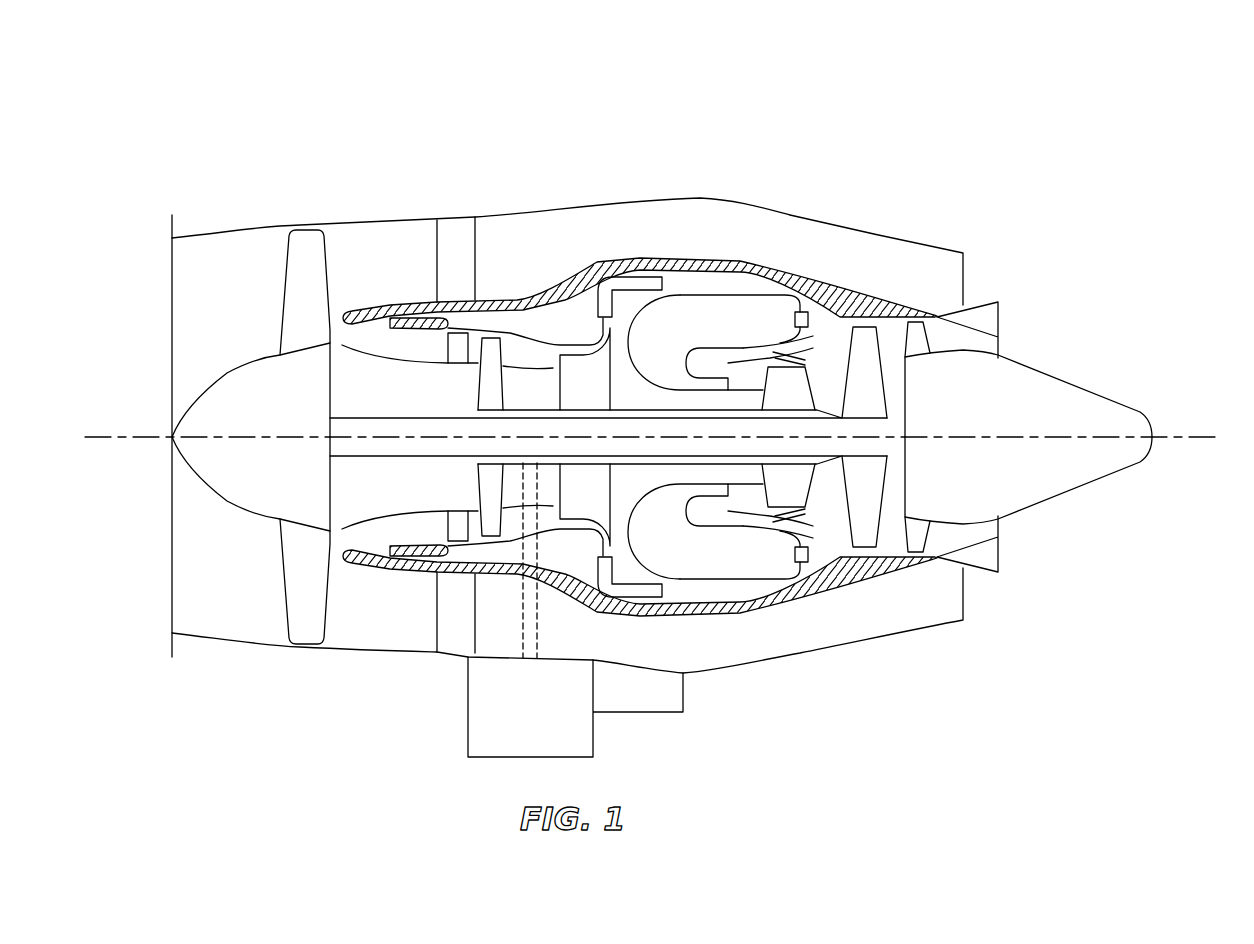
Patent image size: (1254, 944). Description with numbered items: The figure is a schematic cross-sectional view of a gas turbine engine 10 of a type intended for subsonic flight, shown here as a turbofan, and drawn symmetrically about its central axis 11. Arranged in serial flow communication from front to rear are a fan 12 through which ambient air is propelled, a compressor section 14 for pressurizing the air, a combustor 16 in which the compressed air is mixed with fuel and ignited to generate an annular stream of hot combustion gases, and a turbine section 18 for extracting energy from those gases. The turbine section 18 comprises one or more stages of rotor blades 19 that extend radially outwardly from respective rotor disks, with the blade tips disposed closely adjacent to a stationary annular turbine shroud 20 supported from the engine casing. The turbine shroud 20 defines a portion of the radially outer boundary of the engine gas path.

The gas turbine engine 10 is at (845, 146).
The central axis 11 is at (1183, 437).
The fan 12 is at (300, 570).
The compressor section 14 is at (520, 348).
The combustor 16 is at (714, 312).
The turbine section 18 is at (827, 493).
The rotor blades 19 is at (795, 380).
The turbine shroud 20 is at (782, 343).